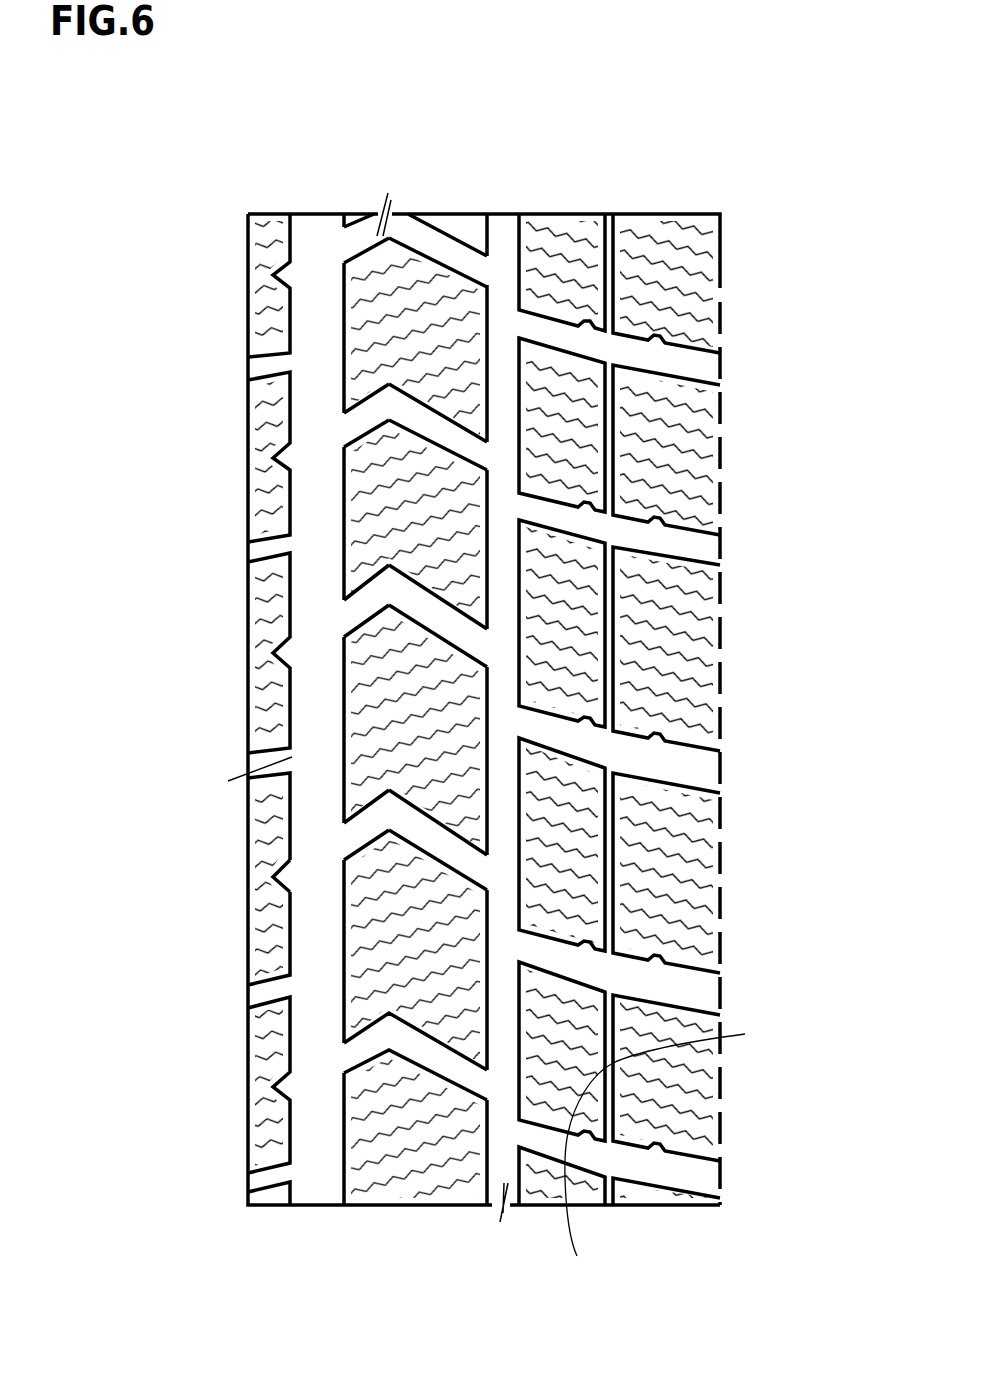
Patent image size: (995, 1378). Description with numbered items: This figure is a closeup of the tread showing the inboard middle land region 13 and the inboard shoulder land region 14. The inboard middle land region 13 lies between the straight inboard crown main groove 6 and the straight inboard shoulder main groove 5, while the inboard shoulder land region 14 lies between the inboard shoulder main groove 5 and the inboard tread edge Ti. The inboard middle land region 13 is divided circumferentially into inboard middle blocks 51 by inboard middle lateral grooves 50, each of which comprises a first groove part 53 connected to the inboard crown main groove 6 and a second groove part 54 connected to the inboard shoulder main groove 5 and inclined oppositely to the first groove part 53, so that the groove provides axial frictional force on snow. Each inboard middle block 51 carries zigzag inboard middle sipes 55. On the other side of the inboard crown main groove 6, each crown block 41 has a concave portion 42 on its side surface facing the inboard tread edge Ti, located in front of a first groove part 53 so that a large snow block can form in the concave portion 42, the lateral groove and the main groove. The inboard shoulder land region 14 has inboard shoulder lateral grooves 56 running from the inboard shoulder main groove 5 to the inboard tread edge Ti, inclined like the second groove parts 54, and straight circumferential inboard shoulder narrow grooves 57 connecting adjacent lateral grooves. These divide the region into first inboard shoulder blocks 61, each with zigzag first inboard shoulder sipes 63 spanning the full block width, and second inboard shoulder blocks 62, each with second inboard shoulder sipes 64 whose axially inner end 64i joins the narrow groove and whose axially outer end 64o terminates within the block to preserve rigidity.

The inboard shoulder main groove 5 is at (500, 273).
The inboard crown main groove 6 is at (316, 274).
The inboard middle land region 13 is at (287, 664).
The inboard shoulder land region 14 is at (695, 120).
The crown block 41 is at (270, 836).
The concave portion 42 is at (288, 878).
The inboard middle lateral groove 50 is at (287, 661).
The inboard middle block 51 is at (398, 491).
The first groove part 53 is at (383, 599).
The second groove part 54 is at (440, 620).
The inboard middle sipe 55 is at (390, 1014).
The inboard shoulder lateral groove 56 is at (607, 532).
The inboard shoulder narrow groove 57 is at (612, 422).
The first inboard shoulder block 61 is at (551, 268).
The second inboard shoulder block 62 is at (668, 283).
The first inboard shoulder sipe 63 is at (600, 930).
The second inboard shoulder sipe 64 is at (666, 1076).
The axially outer end 64o is at (712, 1082).
The axially inner end 64i is at (576, 1250).
The inboard tread edge Ti is at (745, 233).